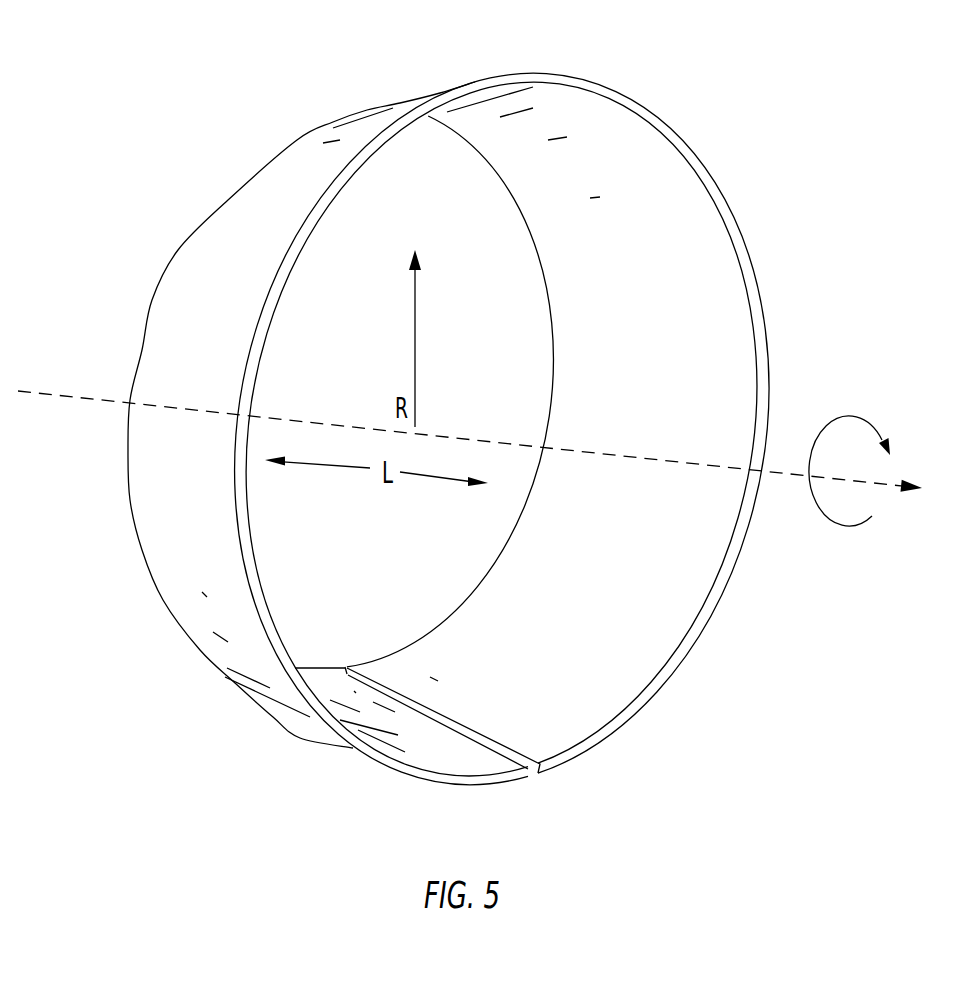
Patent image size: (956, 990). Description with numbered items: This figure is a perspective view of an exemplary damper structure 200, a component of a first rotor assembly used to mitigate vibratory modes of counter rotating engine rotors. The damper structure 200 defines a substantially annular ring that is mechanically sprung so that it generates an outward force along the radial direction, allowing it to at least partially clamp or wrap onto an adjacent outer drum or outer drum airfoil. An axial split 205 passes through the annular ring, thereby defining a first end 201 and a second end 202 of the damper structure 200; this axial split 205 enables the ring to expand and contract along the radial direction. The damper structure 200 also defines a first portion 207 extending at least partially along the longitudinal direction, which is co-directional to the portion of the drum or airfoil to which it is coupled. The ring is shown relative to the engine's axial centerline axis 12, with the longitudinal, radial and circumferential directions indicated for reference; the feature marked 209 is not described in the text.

The damper structure 200 is at (662, 42).
The first portion 207 is at (296, 156).
The front rim / front face of ring 209 is at (592, 116).
The first end 201 is at (429, 758).
The second end 202 is at (543, 738).
The axial split 205 is at (535, 794).
The axial centerline axis 12 is at (888, 484).